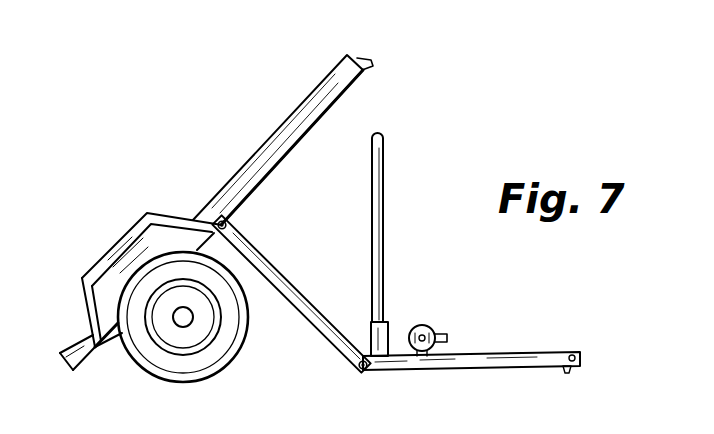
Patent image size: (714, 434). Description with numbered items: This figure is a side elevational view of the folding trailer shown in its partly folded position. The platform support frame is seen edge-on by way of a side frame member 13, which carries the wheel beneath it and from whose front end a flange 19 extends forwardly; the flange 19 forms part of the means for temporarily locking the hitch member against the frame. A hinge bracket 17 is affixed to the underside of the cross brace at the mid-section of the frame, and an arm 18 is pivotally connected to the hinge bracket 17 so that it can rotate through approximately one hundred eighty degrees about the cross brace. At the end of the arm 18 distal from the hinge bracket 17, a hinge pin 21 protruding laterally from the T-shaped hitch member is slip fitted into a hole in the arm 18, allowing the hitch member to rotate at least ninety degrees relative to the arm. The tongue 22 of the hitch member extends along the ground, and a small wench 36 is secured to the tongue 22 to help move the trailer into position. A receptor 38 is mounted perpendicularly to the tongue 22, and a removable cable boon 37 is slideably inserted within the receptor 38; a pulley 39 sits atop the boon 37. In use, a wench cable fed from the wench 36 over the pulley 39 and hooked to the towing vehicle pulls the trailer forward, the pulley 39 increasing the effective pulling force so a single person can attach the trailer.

The side frame member 13 is at (297, 112).
The flange 19 is at (367, 65).
The hinge bracket 17 is at (230, 223).
The arm 18 is at (290, 303).
The hinge pin 21 is at (357, 373).
The tongue 22 is at (505, 357).
The pulley 39 is at (380, 133).
The cable boon 37 is at (385, 182).
The receptor 38 is at (390, 332).
The wench 36 is at (422, 325).